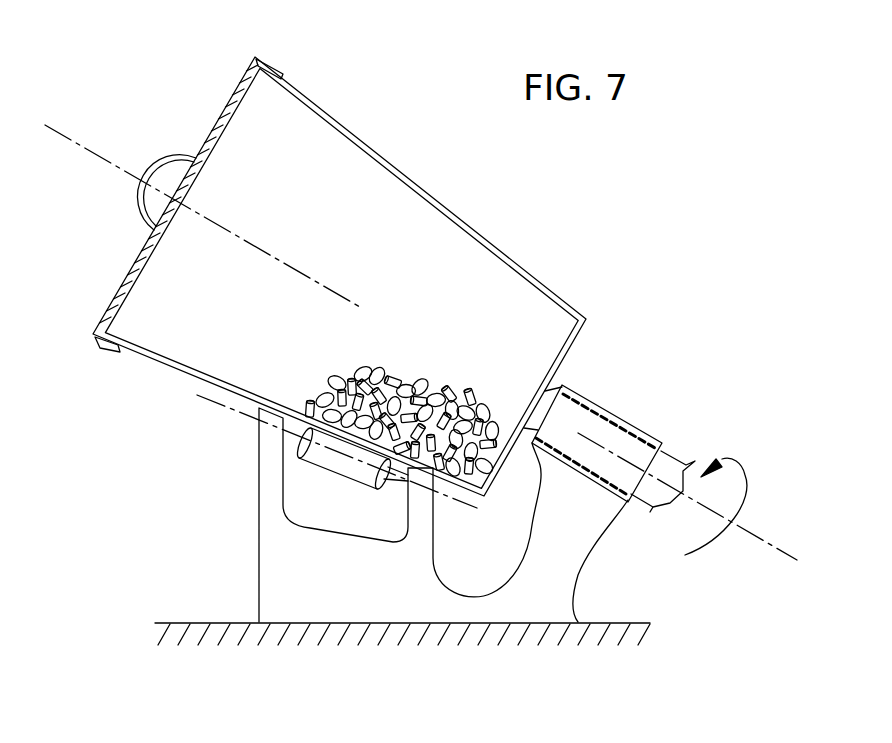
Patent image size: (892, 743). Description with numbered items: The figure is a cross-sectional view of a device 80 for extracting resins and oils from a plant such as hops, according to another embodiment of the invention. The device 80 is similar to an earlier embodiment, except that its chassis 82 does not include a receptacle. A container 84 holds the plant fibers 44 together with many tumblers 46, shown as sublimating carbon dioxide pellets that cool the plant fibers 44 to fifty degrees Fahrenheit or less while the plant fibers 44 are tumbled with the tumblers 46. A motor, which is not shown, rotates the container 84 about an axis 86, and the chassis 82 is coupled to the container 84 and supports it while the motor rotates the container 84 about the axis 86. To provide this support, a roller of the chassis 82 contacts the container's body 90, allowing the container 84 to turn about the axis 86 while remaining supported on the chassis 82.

The device 80 is at (522, 184).
The chassis 82 is at (225, 488).
The container 84 is at (323, 112).
The axis 86 is at (93, 151).
The container's body 90 is at (283, 82).
The plant fibers 44 is at (395, 377).
The tumbler 46 is at (362, 375).